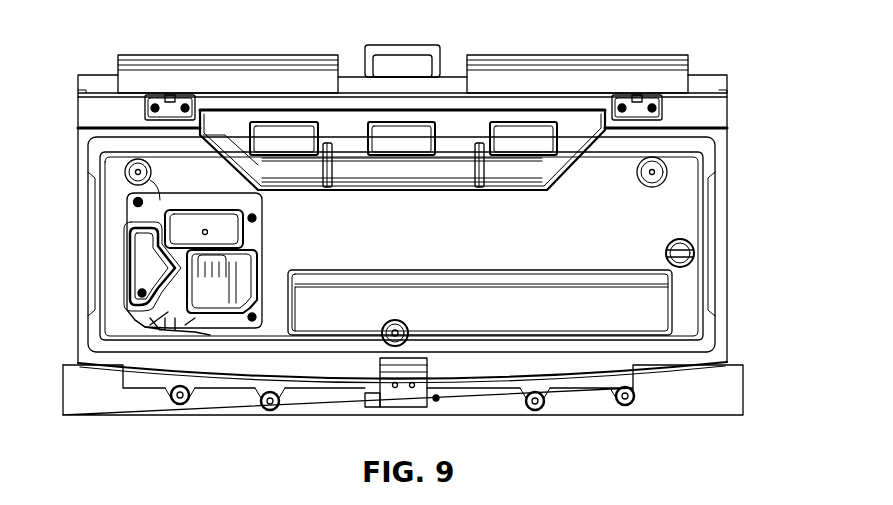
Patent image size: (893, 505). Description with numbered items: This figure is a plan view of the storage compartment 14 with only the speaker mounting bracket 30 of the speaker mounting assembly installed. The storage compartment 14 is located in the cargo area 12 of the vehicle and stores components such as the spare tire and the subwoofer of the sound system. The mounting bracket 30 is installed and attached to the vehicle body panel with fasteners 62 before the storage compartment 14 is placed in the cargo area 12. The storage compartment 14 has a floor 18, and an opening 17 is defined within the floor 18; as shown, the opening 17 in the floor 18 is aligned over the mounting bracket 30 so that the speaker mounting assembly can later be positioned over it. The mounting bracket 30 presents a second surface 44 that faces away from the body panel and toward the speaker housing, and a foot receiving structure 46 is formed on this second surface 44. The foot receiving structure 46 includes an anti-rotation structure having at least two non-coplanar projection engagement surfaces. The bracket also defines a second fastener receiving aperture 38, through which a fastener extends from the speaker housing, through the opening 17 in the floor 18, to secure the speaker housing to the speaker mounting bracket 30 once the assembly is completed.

The cargo area 12 is at (737, 83).
The storage compartment 14 is at (653, 210).
The opening 17 is at (127, 222).
The floor 18 is at (422, 246).
The speaker mounting bracket 30 is at (175, 328).
The second fastener receiving aperture 38 is at (205, 230).
The second surface 44 is at (125, 172).
The foot receiving structure 46 is at (143, 228).
The fasteners 62 is at (134, 202).